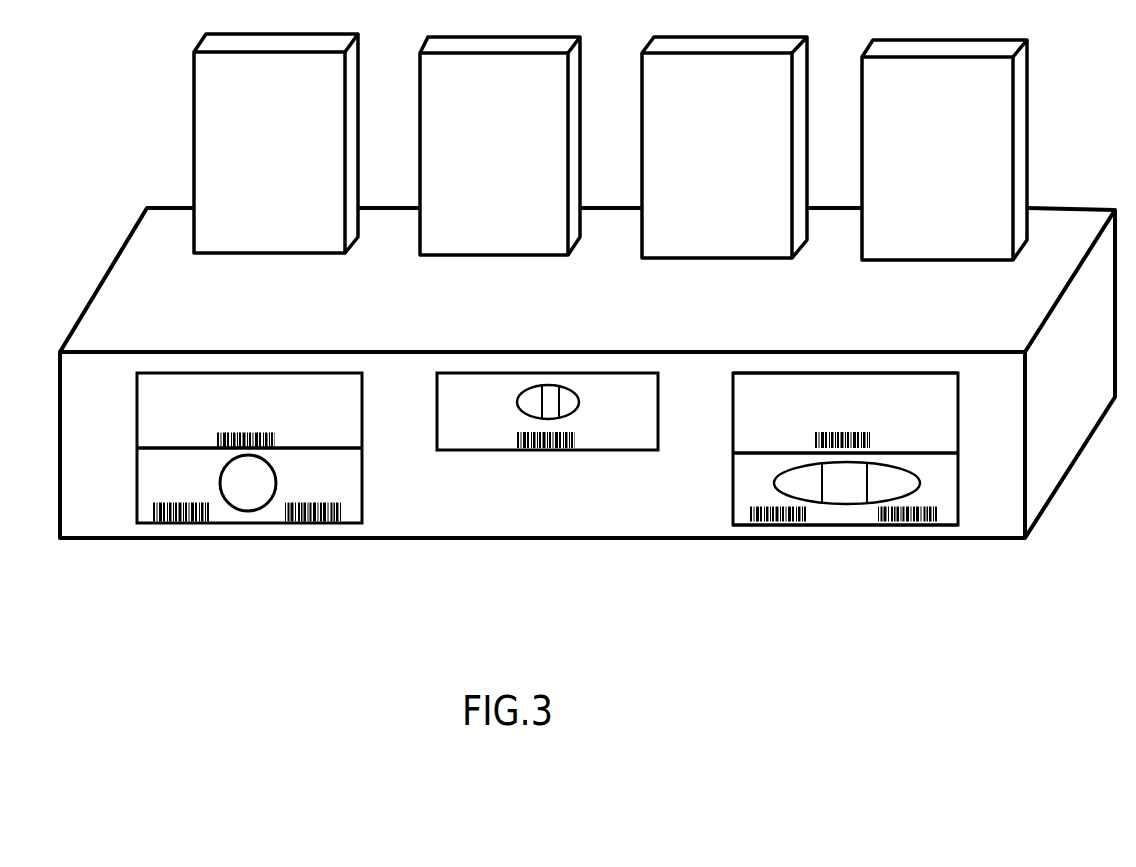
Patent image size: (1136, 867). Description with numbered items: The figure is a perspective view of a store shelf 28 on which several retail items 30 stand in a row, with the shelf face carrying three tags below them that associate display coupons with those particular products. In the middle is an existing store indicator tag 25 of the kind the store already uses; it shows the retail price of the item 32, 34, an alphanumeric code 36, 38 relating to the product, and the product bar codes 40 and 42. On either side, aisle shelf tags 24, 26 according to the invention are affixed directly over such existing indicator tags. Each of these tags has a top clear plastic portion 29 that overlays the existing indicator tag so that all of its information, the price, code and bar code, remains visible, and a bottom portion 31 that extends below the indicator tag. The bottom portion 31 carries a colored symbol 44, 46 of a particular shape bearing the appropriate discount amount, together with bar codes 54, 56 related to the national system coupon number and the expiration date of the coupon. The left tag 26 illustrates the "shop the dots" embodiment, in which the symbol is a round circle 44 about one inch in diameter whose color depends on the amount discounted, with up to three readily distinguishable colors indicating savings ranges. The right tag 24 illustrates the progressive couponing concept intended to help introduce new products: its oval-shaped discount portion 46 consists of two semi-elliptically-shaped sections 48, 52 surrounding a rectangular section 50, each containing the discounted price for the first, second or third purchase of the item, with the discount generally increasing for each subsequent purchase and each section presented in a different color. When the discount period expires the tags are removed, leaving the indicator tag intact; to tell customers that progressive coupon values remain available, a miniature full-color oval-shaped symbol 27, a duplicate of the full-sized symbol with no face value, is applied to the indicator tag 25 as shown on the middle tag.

The aisle shelf tag 24 is at (960, 433).
The existing store indicator tag 25 is at (590, 373).
The aisle shelf tag 26 is at (365, 433).
The miniature progressive coupon oval-shaped symbol 27 is at (574, 417).
The in-store shelf 28 is at (613, 530).
The top clear plastic portion 29 is at (967, 378).
The retail item 30 is at (257, 255).
The bottom portion 31 is at (958, 522).
The retail price of the item 32 is at (947, 397).
The retail price of the item 34 is at (350, 398).
The alphanumeric code 36 is at (140, 392).
The alphanumeric code 38 is at (737, 392).
The bar code 40 is at (217, 437).
The bar code 42 is at (815, 440).
The colored symbol 44 is at (276, 479).
The oval-shaped discount portion 46 is at (857, 466).
The semi-elliptically-shaped section 48 is at (785, 488).
The rectangular section 50 is at (868, 461).
The semi-elliptically-shaped section 52 is at (912, 483).
The bar code 54 is at (185, 523).
The bar code 56 is at (787, 523).